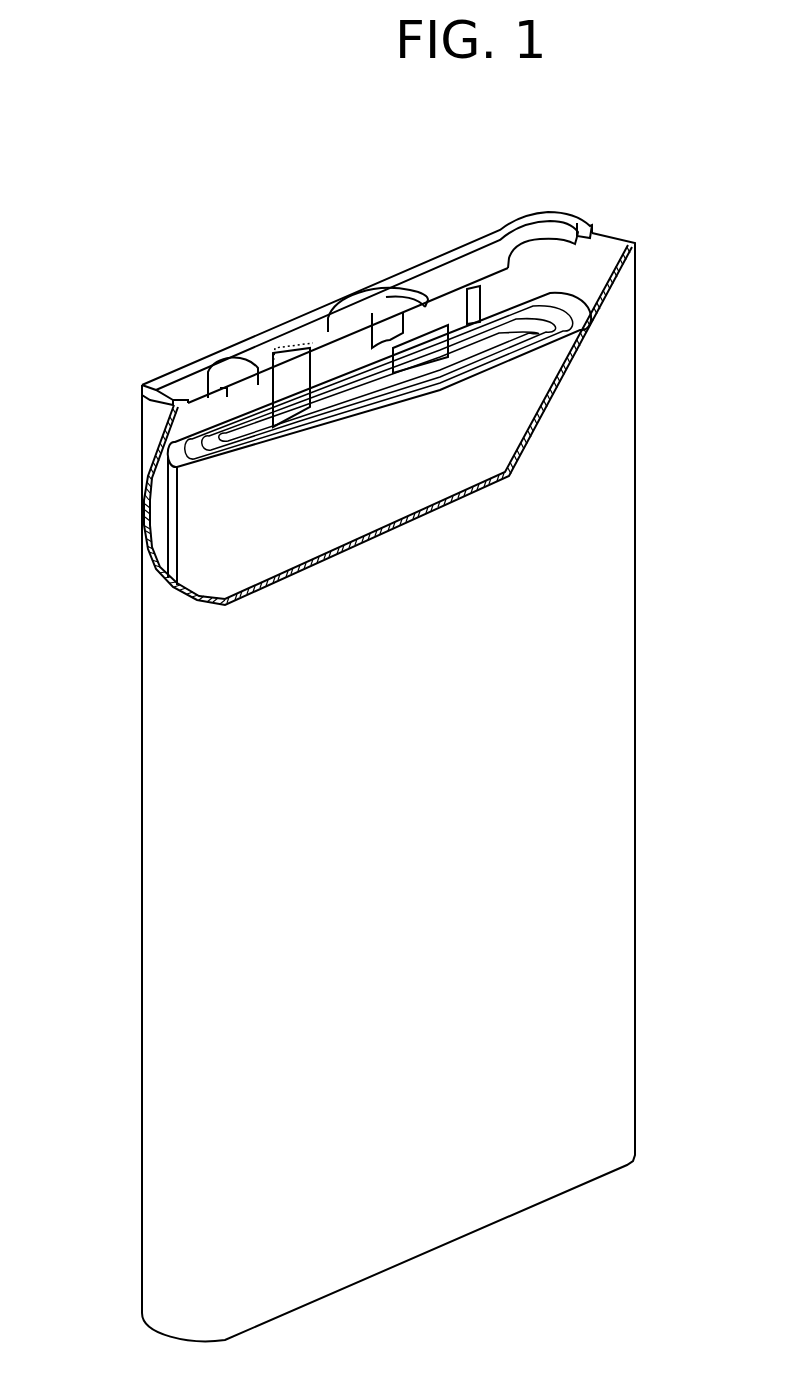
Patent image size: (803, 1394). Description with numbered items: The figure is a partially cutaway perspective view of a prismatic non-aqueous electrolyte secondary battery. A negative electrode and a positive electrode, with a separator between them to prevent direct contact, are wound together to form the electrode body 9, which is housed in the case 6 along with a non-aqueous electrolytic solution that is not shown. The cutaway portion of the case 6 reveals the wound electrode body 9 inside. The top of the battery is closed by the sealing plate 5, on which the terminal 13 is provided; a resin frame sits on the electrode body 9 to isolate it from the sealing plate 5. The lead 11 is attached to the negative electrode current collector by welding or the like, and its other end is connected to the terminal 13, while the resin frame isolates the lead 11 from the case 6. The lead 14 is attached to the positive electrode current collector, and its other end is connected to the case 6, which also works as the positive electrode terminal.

The sealing plate 5 is at (492, 262).
The case 6 is at (615, 597).
The electrode body 9 is at (235, 512).
The lead 11 is at (285, 392).
The terminal 13 is at (378, 280).
The lead 14 is at (418, 348).